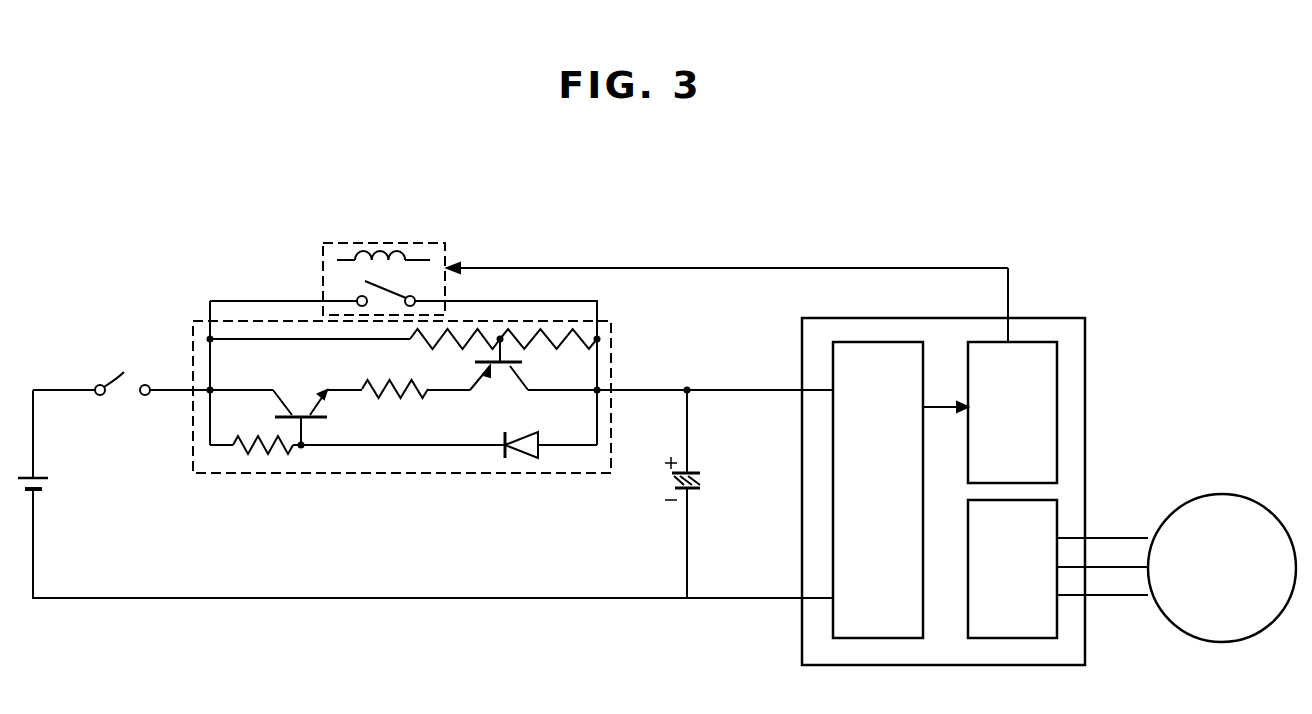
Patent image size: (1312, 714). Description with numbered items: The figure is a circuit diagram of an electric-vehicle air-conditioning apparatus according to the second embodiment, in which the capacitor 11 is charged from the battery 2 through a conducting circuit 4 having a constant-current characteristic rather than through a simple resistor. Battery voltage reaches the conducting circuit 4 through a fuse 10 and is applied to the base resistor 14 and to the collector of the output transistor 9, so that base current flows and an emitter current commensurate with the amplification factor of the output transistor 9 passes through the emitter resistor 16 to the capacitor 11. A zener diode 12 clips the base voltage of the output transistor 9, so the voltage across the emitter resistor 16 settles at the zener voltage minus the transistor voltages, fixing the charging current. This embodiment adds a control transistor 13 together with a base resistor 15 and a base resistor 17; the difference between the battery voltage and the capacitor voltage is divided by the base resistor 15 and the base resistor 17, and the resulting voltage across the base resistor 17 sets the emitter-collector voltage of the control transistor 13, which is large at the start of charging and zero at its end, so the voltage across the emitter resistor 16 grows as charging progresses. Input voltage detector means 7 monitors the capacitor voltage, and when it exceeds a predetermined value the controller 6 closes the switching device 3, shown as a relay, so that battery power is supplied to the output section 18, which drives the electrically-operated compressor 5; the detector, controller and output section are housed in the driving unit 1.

The controller unit 1 is at (1048, 318).
The battery 2 is at (45, 478).
The switching device 3 is at (372, 243).
The conducting circuit 4 is at (352, 473).
The electrically operated compressor 5 is at (1222, 494).
The controller 6 is at (1058, 380).
The input voltage detector means 7 is at (866, 342).
The output transistor 9 is at (300, 402).
The fuse 10 is at (124, 372).
The capacitor 11 is at (692, 475).
The zener diode 12 is at (520, 462).
The control transistor 13 is at (503, 379).
The base resistor 14 is at (270, 460).
The base resistor 15 is at (424, 343).
The emitter resistor 16 is at (412, 402).
The base resistor 17 is at (594, 346).
The output section 18 is at (1058, 515).